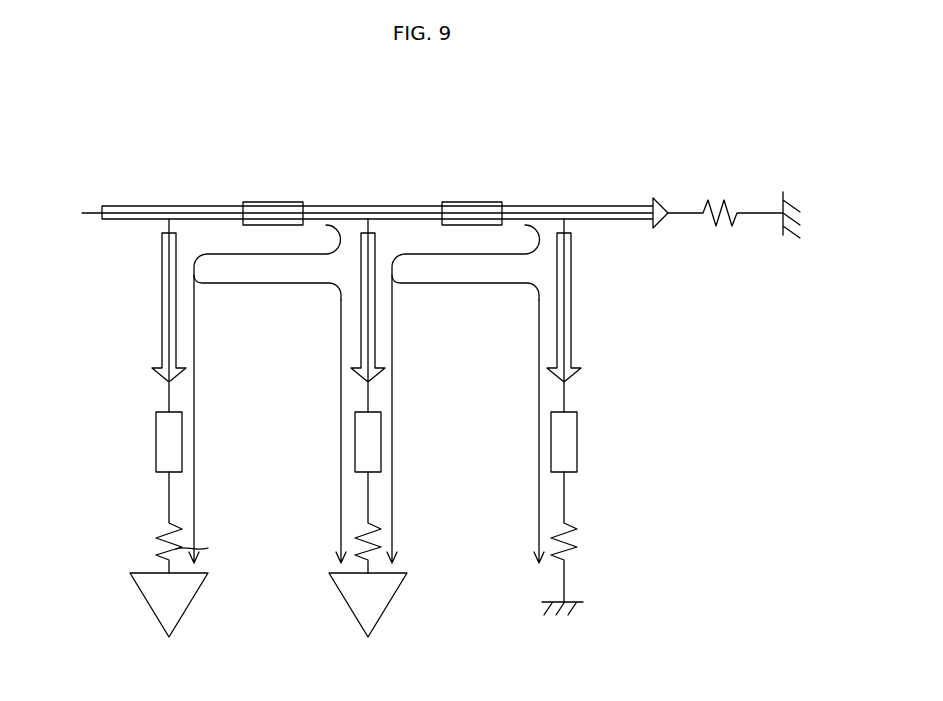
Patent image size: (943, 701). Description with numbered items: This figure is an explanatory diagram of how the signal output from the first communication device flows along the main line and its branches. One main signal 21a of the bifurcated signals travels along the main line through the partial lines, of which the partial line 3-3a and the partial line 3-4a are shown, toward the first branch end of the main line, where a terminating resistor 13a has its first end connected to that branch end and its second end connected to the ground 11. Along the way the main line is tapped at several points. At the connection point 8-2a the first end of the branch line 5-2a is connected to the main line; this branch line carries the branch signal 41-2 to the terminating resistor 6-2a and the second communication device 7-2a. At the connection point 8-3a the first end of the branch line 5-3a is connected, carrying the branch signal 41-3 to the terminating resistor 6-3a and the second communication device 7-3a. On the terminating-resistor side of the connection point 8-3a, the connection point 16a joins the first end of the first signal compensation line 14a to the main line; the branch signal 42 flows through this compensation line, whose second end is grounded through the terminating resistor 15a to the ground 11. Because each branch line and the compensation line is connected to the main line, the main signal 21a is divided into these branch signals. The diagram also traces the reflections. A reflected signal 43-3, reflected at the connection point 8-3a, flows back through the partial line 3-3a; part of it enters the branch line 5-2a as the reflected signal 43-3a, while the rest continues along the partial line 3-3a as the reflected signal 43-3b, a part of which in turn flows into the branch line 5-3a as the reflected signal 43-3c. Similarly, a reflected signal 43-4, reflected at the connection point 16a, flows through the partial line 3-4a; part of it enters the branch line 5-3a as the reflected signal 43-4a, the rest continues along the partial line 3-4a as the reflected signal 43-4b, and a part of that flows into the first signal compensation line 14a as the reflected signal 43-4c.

The main signal 21a is at (620, 221).
The terminating resistor 13a is at (721, 200).
The ground 11 is at (785, 240).
The connection point 8-2a is at (168, 205).
The branch signal 41-2 is at (160, 322).
The branch line 5-2a is at (155, 435).
The terminating resistor 6-2a is at (162, 522).
The second communication device 7-2a is at (160, 624).
The partial line 3-3a is at (264, 202).
The reflected signal 43-3 is at (307, 254).
The reflected signal 43-3a is at (196, 460).
The reflected signal 43-3b is at (228, 284).
The reflected signal 43-3c is at (340, 538).
The connection point 8-3a is at (367, 205).
The branch signal 41-3 is at (358, 340).
The branch line 5-3a is at (354, 420).
The terminating resistor 6-3a is at (360, 523).
The second communication device 7-3a is at (358, 624).
The partial line 3-4a is at (464, 202).
The reflected signal 43-4 is at (506, 254).
The reflected signal 43-4a is at (394, 486).
The reflected signal 43-4b is at (418, 284).
The reflected signal 43-4c is at (537, 420).
The connection point 16a is at (564, 205).
The branch signal 42 is at (573, 330).
The first signal compensation line 14a is at (578, 440).
The terminating resistor 15a is at (576, 550).